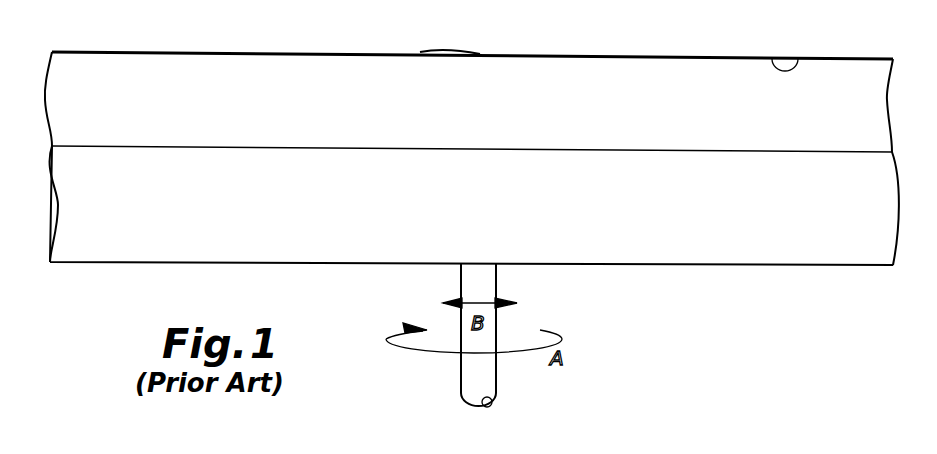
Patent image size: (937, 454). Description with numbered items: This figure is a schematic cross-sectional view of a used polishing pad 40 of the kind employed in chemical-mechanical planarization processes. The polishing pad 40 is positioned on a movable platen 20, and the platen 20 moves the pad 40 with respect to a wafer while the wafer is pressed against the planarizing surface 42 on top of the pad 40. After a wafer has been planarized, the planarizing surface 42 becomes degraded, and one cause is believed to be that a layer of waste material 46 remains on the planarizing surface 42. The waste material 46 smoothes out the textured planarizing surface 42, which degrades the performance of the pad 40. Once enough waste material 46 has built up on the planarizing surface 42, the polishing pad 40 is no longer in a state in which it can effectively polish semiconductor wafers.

The movable platen 20 is at (485, 223).
The polishing pad 40 is at (498, 128).
The planarizing surface 42 is at (800, 58).
The layer of waste material 46 is at (132, 51).